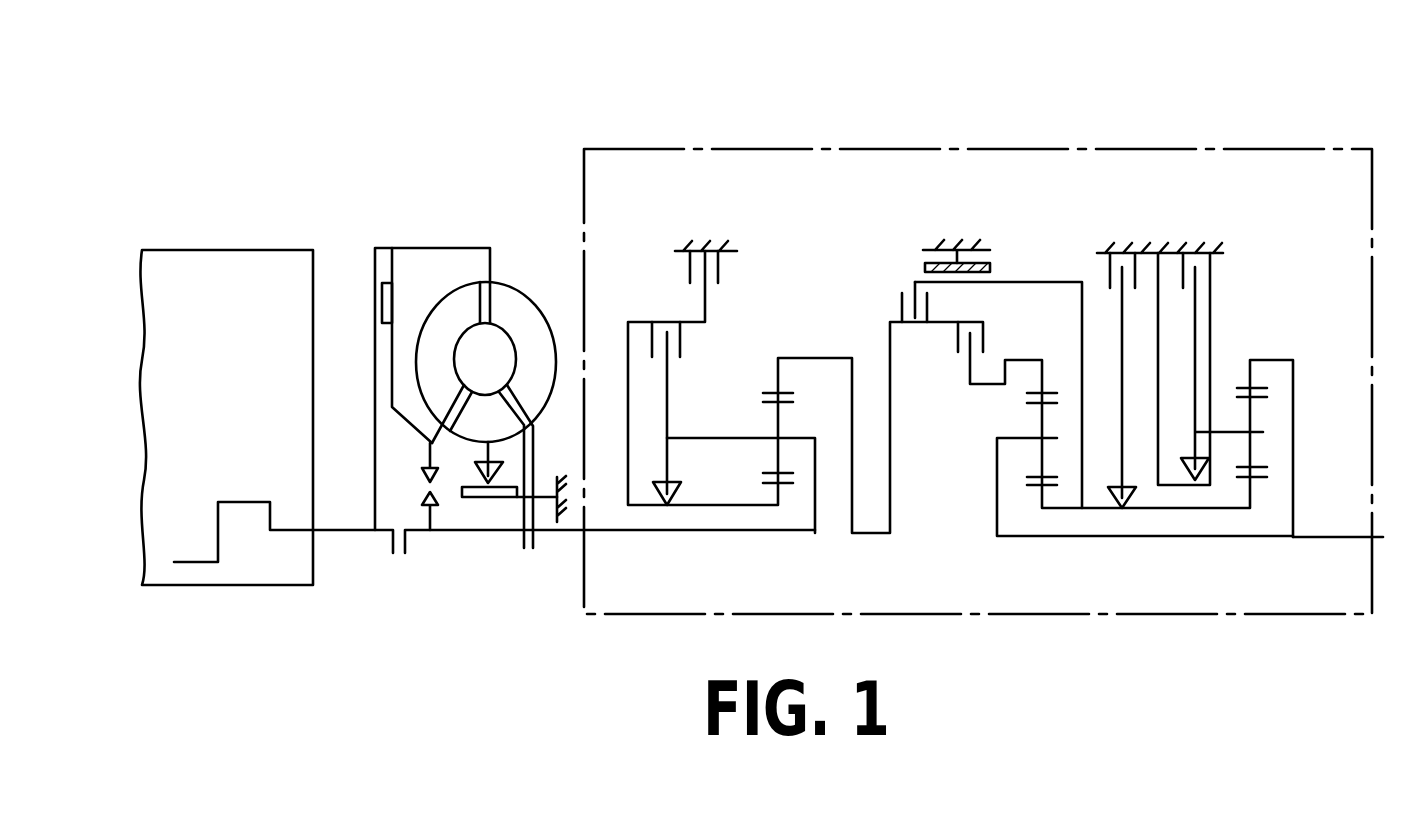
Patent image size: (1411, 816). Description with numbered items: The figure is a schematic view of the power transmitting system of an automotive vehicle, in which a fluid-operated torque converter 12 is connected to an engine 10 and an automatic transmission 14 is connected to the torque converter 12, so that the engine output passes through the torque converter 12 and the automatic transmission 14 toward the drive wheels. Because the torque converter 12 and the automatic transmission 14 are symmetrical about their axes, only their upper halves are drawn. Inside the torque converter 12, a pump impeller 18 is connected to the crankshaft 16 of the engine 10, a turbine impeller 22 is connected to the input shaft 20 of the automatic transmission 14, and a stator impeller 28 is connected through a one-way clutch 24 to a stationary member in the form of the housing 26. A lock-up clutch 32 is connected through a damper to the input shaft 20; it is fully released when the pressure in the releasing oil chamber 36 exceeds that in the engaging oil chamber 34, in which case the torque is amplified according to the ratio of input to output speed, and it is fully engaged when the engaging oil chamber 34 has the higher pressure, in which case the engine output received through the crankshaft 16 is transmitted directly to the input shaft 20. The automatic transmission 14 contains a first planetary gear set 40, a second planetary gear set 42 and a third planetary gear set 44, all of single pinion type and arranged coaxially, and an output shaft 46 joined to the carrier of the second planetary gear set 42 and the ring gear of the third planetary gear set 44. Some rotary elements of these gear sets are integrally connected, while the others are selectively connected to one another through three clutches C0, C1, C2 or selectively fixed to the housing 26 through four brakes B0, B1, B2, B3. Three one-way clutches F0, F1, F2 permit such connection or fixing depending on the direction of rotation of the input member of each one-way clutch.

The engine 10 is at (242, 265).
The torque converter 12 is at (448, 375).
The automatic transmission 14 is at (905, 125).
The crankshaft 16 is at (323, 535).
The pump impeller 18 is at (525, 292).
The input shaft 20 is at (768, 537).
The turbine impeller 22 is at (450, 308).
The one-way clutch 24 is at (473, 497).
The housing 26 is at (566, 513).
The stator impeller 28 is at (458, 443).
The lock-up clutch 32 is at (380, 300).
The engaging oil chamber 34 is at (403, 263).
The releasing oil chamber 36 is at (373, 460).
The first planetary gear set 40 is at (792, 338).
The second planetary gear set 42 is at (1012, 555).
The third planetary gear set 44 is at (1273, 340).
The output shaft 46 is at (1340, 538).
The brake B0 is at (687, 268).
The brake B1 is at (923, 270).
The brake B2 is at (1107, 272).
The brake B3 is at (1212, 280).
The clutch C0 is at (680, 343).
The clutch C1 is at (958, 340).
The clutch C2 is at (898, 307).
The one-way clutch F0 is at (673, 490).
The one-way clutch F1 is at (1122, 497).
The one-way clutch F2 is at (1200, 467).